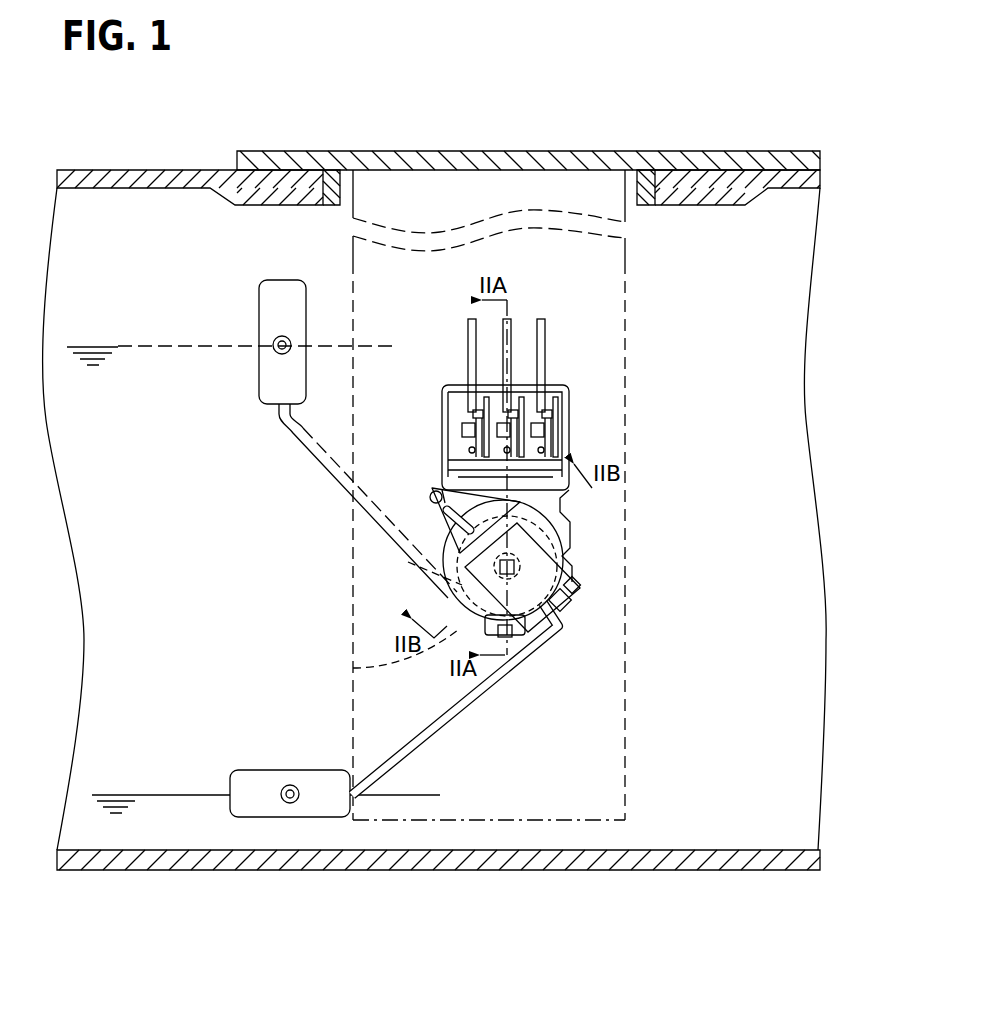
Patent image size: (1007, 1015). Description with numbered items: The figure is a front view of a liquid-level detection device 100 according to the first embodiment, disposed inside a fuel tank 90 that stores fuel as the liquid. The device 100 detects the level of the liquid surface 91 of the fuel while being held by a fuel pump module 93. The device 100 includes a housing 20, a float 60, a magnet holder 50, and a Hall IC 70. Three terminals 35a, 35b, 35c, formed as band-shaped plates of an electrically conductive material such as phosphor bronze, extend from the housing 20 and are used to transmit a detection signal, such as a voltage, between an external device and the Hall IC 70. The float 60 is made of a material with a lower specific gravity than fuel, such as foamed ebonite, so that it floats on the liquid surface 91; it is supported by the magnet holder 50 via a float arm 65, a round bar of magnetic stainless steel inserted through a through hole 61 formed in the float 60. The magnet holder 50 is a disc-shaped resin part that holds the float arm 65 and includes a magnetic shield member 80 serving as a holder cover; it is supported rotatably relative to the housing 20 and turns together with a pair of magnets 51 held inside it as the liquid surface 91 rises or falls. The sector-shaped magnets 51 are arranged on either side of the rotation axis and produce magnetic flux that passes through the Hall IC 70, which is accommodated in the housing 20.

The fuel tank 90 is at (106, 170).
The liquid surface 91 is at (97, 346).
The fuel pump module 93 is at (632, 278).
The liquid-level detection device 100 is at (525, 468).
The housing 20 is at (570, 413).
The terminal 35a is at (468, 458).
The terminal 35b is at (540, 455).
The terminal 35c is at (551, 437).
The magnetic shield member 80 is at (573, 527).
The magnet holder 50 is at (570, 567).
The magnet 51 is at (445, 598).
The float arm 65 is at (545, 653).
The Hall IC 70 is at (353, 667).
The float 60 is at (292, 778).
The through hole 61 is at (282, 794).